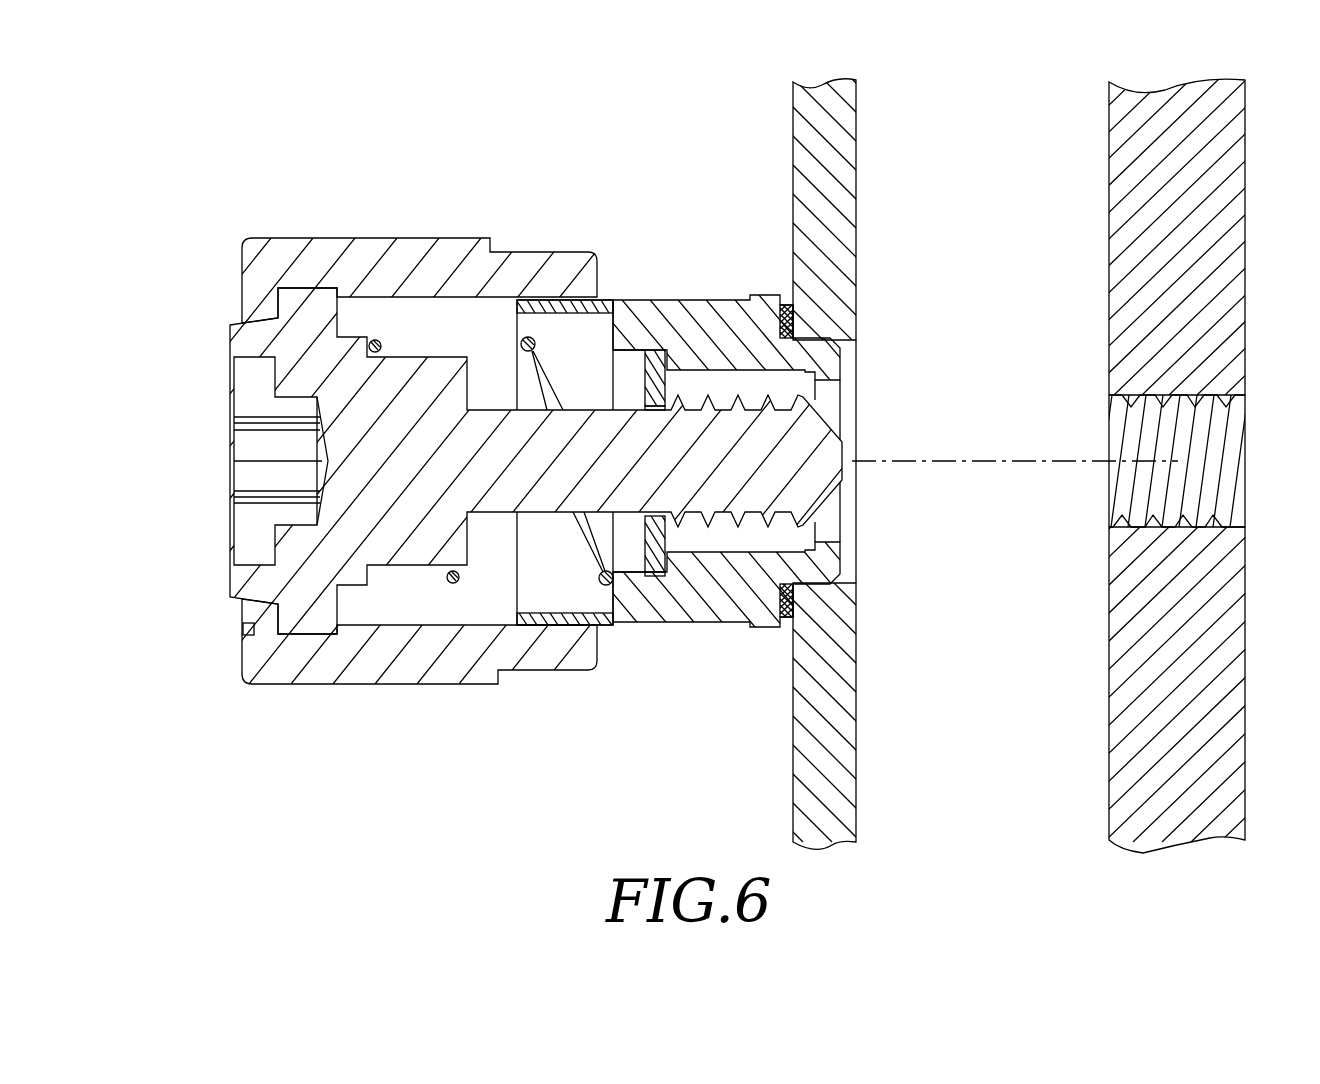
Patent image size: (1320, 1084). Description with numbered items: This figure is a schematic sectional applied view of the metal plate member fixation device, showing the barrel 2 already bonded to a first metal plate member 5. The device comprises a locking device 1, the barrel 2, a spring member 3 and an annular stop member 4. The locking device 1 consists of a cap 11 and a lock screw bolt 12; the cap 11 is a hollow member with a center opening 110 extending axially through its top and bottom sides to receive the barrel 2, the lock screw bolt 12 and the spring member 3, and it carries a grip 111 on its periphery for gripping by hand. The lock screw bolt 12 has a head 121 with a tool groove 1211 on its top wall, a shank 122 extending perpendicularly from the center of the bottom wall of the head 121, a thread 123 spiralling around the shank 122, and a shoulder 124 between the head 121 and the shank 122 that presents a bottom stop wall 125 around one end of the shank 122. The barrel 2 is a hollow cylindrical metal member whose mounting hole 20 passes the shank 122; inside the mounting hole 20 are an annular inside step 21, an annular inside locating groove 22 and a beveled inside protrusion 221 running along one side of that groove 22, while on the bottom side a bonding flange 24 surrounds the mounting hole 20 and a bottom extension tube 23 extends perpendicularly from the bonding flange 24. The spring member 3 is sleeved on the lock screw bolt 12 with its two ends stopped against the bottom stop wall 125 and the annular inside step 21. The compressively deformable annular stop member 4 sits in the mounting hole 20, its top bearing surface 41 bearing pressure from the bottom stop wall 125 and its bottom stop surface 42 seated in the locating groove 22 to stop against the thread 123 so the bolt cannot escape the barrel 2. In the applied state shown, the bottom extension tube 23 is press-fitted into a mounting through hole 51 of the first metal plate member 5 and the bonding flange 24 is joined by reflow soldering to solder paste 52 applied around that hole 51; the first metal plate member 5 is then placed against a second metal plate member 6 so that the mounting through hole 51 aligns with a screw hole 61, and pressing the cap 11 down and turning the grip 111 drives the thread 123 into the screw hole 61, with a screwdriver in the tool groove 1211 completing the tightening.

The locking device 1 is at (373, 179).
The cap 11 is at (538, 251).
The grip 111 is at (370, 238).
The center opening 110 is at (476, 326).
The lock screw bolt 12 is at (224, 379).
The head 121 is at (300, 303).
The tool groove 1211 is at (248, 445).
The shank 122 is at (583, 410).
The thread 123 is at (723, 530).
The shoulder 124 is at (397, 563).
The bottom stop wall 125 is at (467, 543).
The spring member 3 is at (449, 586).
The annular inside step 21 is at (613, 327).
The beveled inside protrusion 221 is at (643, 350).
The annular inside locating groove 22 is at (648, 350).
The barrel 2 is at (718, 294).
The mounting hole 20 is at (784, 385).
The bottom extension tube 23 is at (808, 337).
The bonding flange 24 is at (786, 305).
The annular stop member 4 is at (662, 586).
The top bearing surface 41 is at (647, 577).
The bottom stop surface 42 is at (681, 572).
The first metal plate member 5 is at (846, 767).
The mounting through hole 51 is at (846, 582).
The solder paste 52 is at (797, 610).
The second metal plate member 6 is at (1238, 730).
The screw hole 61 is at (1232, 478).